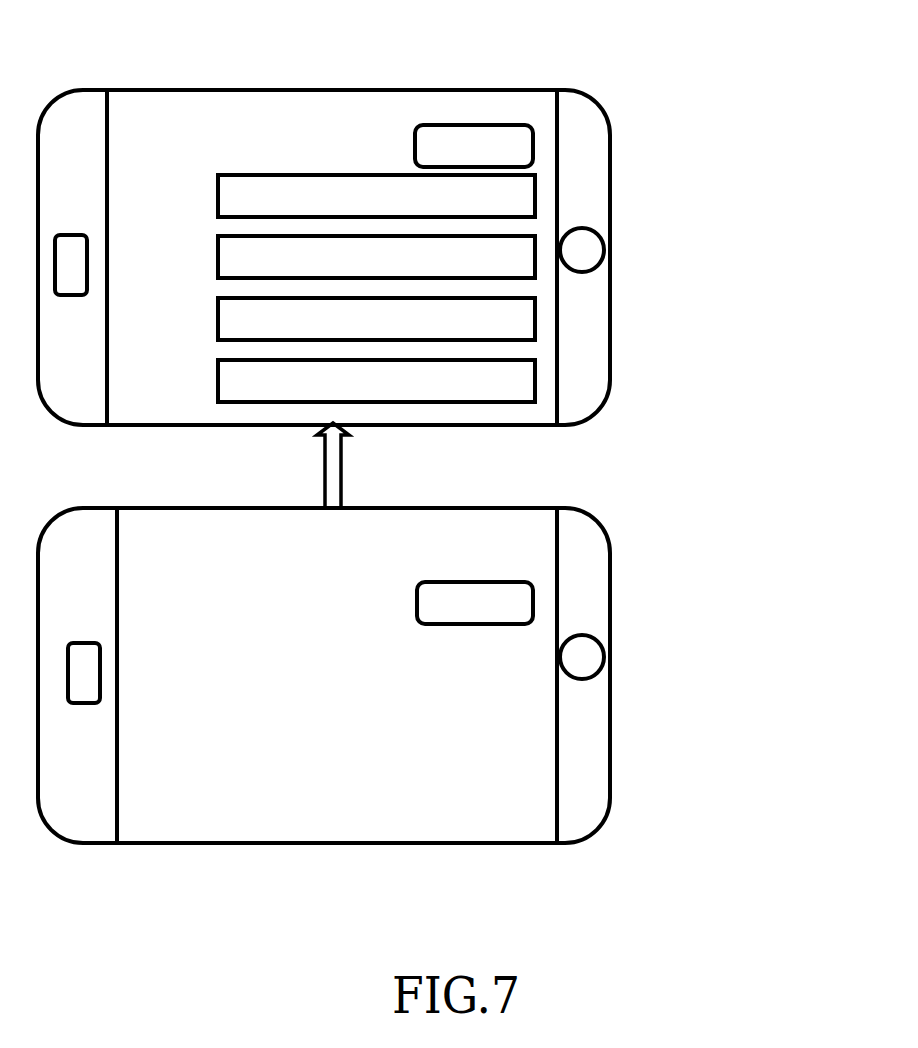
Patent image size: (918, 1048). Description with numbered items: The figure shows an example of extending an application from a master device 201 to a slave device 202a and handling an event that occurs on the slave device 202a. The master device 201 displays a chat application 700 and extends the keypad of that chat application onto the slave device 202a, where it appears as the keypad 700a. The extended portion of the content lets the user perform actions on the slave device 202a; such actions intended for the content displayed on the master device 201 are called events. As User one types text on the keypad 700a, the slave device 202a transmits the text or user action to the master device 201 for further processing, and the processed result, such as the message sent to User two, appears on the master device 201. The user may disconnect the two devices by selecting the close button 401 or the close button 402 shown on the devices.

The chat application 700 is at (292, 118).
The close button 401 is at (488, 124).
The master device 201 is at (429, 226).
The keypad 700a is at (293, 632).
The close button 402 is at (488, 581).
The slave device 202a is at (417, 650).